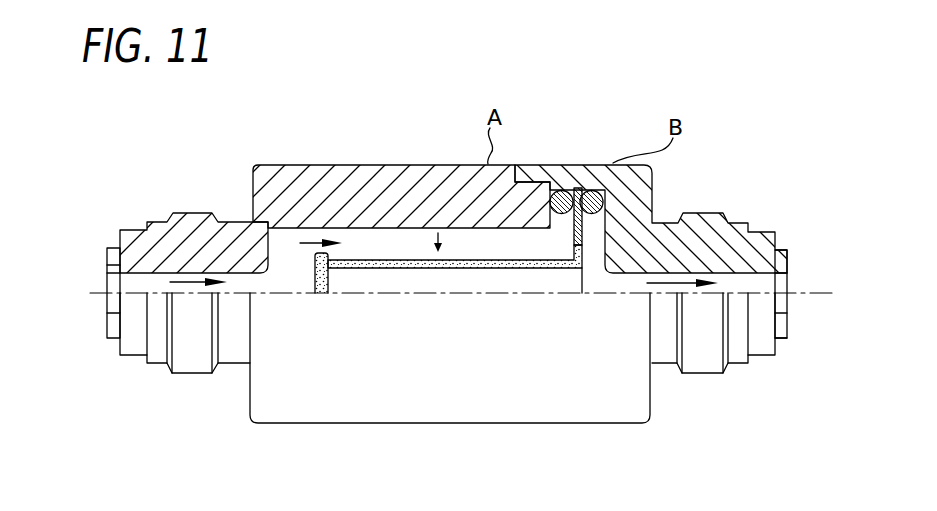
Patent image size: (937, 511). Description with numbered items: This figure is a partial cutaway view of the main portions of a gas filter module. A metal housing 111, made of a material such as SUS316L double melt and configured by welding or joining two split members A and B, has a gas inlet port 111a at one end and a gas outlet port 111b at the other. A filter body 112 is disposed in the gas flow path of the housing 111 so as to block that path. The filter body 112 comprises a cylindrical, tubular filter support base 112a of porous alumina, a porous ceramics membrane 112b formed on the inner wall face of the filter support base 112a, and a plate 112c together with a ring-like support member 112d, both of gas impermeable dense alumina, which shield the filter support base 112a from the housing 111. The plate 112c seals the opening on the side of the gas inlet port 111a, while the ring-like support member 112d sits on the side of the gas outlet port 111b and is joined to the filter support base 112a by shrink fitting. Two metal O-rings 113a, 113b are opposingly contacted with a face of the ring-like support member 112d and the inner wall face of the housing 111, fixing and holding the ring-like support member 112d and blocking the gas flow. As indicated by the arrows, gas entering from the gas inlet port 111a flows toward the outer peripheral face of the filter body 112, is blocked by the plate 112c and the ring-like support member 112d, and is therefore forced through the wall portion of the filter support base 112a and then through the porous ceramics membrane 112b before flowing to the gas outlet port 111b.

The housing 111 is at (446, 148).
The gas inlet port 111a is at (157, 288).
The gas outlet port 111b is at (772, 289).
The filter body 112 is at (487, 282).
The filter support base 112a is at (329, 278).
The porous ceramics membrane 112b is at (408, 269).
The plate 112c is at (317, 272).
The ring-like support member 112d is at (583, 230).
The metal O-ring 113a is at (566, 190).
The metal O-ring 113b is at (595, 190).